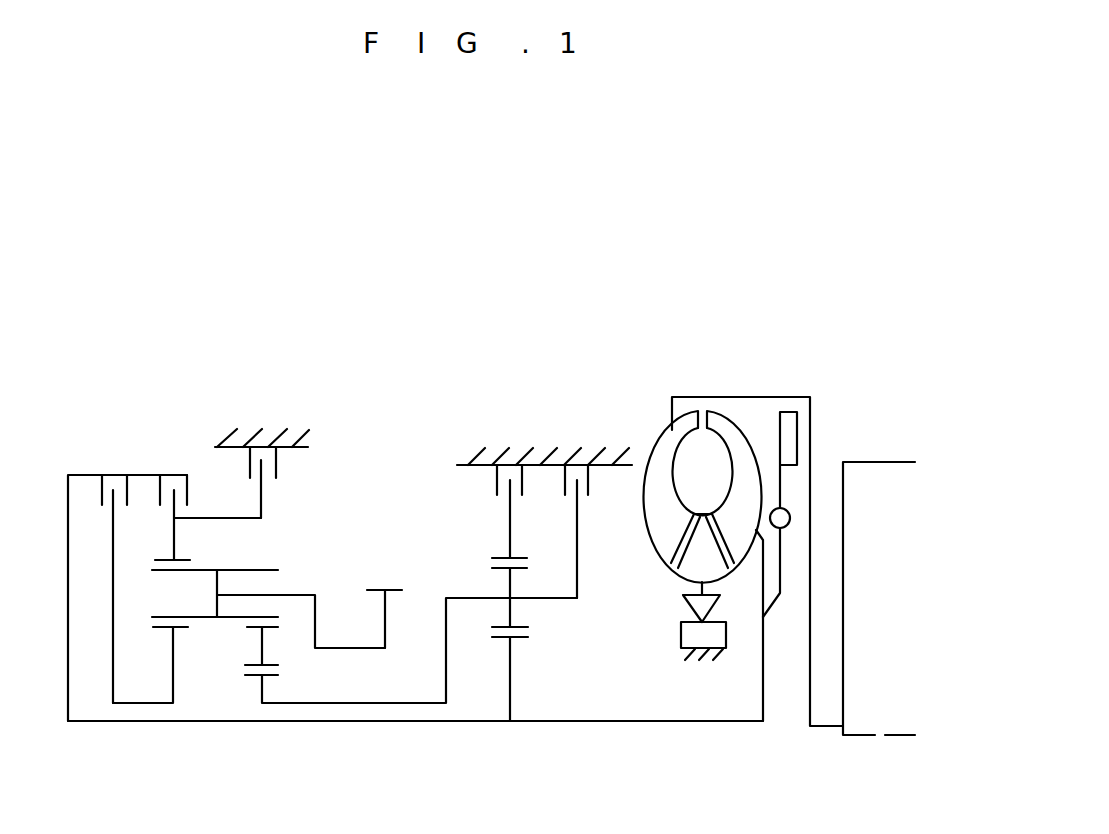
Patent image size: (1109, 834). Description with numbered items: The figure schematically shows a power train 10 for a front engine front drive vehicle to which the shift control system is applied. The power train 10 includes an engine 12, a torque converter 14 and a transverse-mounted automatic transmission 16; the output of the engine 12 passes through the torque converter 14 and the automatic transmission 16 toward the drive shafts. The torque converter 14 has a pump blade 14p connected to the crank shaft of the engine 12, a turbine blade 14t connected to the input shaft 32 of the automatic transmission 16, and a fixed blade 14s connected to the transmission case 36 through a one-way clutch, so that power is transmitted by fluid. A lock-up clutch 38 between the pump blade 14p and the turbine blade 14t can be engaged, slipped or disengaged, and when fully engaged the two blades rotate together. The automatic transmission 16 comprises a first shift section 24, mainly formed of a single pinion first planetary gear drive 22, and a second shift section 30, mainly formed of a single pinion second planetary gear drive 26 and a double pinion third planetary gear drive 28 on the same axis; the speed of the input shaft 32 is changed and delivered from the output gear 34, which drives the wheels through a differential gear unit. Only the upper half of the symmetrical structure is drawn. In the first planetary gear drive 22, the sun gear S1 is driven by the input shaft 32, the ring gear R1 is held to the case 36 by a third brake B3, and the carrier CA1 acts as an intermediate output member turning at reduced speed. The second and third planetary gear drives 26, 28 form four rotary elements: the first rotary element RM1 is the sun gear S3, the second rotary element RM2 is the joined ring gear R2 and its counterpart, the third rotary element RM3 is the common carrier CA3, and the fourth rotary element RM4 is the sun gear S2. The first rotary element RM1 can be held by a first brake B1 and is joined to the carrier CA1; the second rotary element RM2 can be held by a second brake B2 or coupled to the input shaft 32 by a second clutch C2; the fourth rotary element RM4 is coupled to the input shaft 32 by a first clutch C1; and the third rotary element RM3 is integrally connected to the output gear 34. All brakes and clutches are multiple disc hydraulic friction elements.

The power train 10 is at (591, 272).
The engine 12 is at (880, 718).
The torque converter 14 is at (792, 345).
The pump blade 14p is at (667, 442).
The turbine blade 14t is at (733, 435).
The fixed blade 14s is at (690, 564).
The automatic transmission 16 is at (605, 370).
The first planetary gear drive 22 is at (505, 731).
The first shift section 24 is at (426, 466).
The second planetary gear drive 26 is at (174, 723).
The third planetary gear drive 28 is at (266, 723).
The second shift section 30 is at (337, 424).
The input shaft 32 is at (603, 724).
The output gear 34 is at (393, 590).
The transmission case 36 is at (262, 437).
The lock-up clutch 38 is at (797, 428).
The first clutch C1 is at (127, 582).
The second clutch C2 is at (168, 502).
The first brake B1 is at (597, 531).
The second brake B2 is at (266, 473).
The third brake B3 is at (542, 503).
The ring gear R1 is at (512, 558).
The ring gear R2 is at (185, 560).
The sun gear S1 is at (528, 637).
The sun gear S2 is at (185, 628).
The sun gear S3 is at (278, 668).
The carrier CA1 is at (580, 572).
The carrier CA3 is at (314, 595).
The first rotary element RM1 is at (332, 722).
The second rotary element RM2 is at (217, 518).
The third rotary element RM3 is at (347, 650).
The fourth rotary element RM4 is at (173, 668).